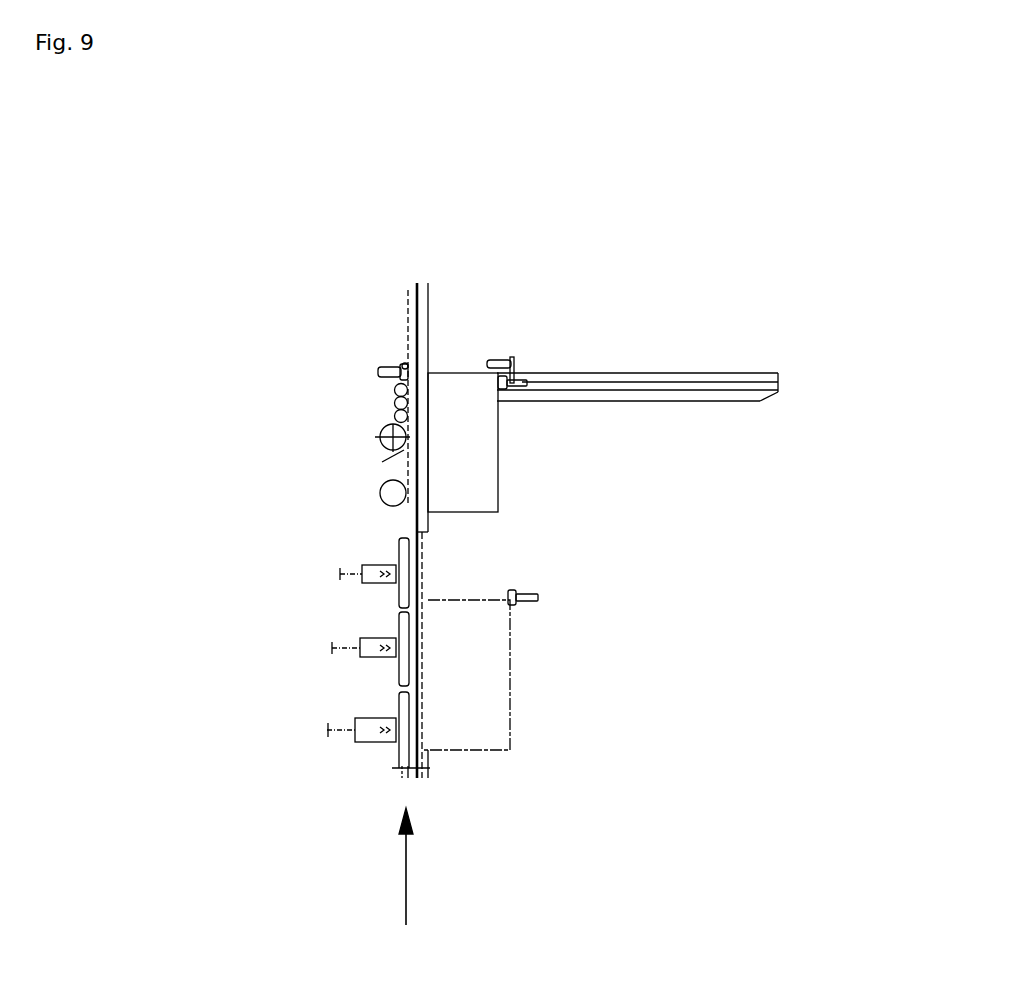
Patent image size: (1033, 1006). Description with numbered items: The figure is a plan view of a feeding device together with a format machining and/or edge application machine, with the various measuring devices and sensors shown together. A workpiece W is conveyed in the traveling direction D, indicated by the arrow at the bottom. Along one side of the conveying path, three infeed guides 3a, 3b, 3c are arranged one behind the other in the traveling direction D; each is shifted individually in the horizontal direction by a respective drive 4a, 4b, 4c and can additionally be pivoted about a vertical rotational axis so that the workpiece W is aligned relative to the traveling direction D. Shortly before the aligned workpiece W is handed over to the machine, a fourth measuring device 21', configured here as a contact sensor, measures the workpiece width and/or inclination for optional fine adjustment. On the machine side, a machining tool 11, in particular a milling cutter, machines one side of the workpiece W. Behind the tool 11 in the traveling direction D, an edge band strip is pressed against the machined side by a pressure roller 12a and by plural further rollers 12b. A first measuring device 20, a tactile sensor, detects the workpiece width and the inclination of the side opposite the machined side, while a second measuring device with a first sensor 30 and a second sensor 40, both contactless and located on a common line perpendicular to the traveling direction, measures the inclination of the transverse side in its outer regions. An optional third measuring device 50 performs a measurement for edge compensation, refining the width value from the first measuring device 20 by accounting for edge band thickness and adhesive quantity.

The workpiece W is at (448, 387).
The first measuring device 20 is at (518, 377).
The second sensor 40 is at (500, 360).
The fourth measuring device 21' is at (554, 568).
The first sensor 30 is at (405, 362).
The third measuring device 50 is at (380, 372).
The further rollers 12b is at (378, 397).
The pressure roller 12a is at (383, 428).
The machining tool 11 is at (390, 494).
The infeed guide 3a is at (393, 760).
The infeed guide 3b is at (395, 668).
The infeed guide 3c is at (395, 592).
The drive 4a is at (350, 727).
The drive 4b is at (330, 648).
The drive 4c is at (340, 573).
The traveling direction D is at (405, 888).